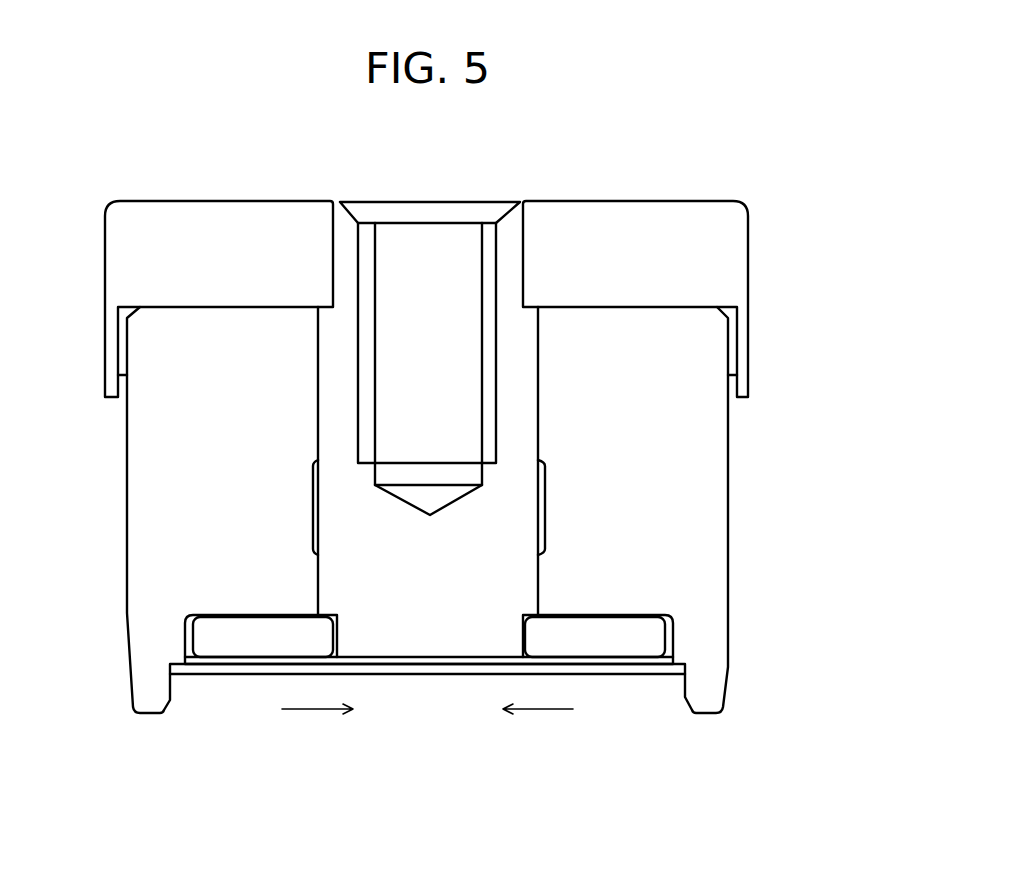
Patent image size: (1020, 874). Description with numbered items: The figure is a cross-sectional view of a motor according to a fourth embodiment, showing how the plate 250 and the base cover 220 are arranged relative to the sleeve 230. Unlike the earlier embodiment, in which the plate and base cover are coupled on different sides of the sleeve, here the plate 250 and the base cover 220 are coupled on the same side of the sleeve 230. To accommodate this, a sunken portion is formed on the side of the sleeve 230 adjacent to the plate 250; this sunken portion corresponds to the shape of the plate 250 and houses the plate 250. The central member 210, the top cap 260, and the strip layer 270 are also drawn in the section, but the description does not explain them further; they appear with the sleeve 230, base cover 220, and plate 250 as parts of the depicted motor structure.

The central member 210 is at (392, 630).
The base cover 220 is at (637, 670).
The sleeve 230 is at (708, 510).
The plate 250 is at (202, 632).
The top cap 260 is at (640, 217).
The strip layer 270 is at (240, 658).